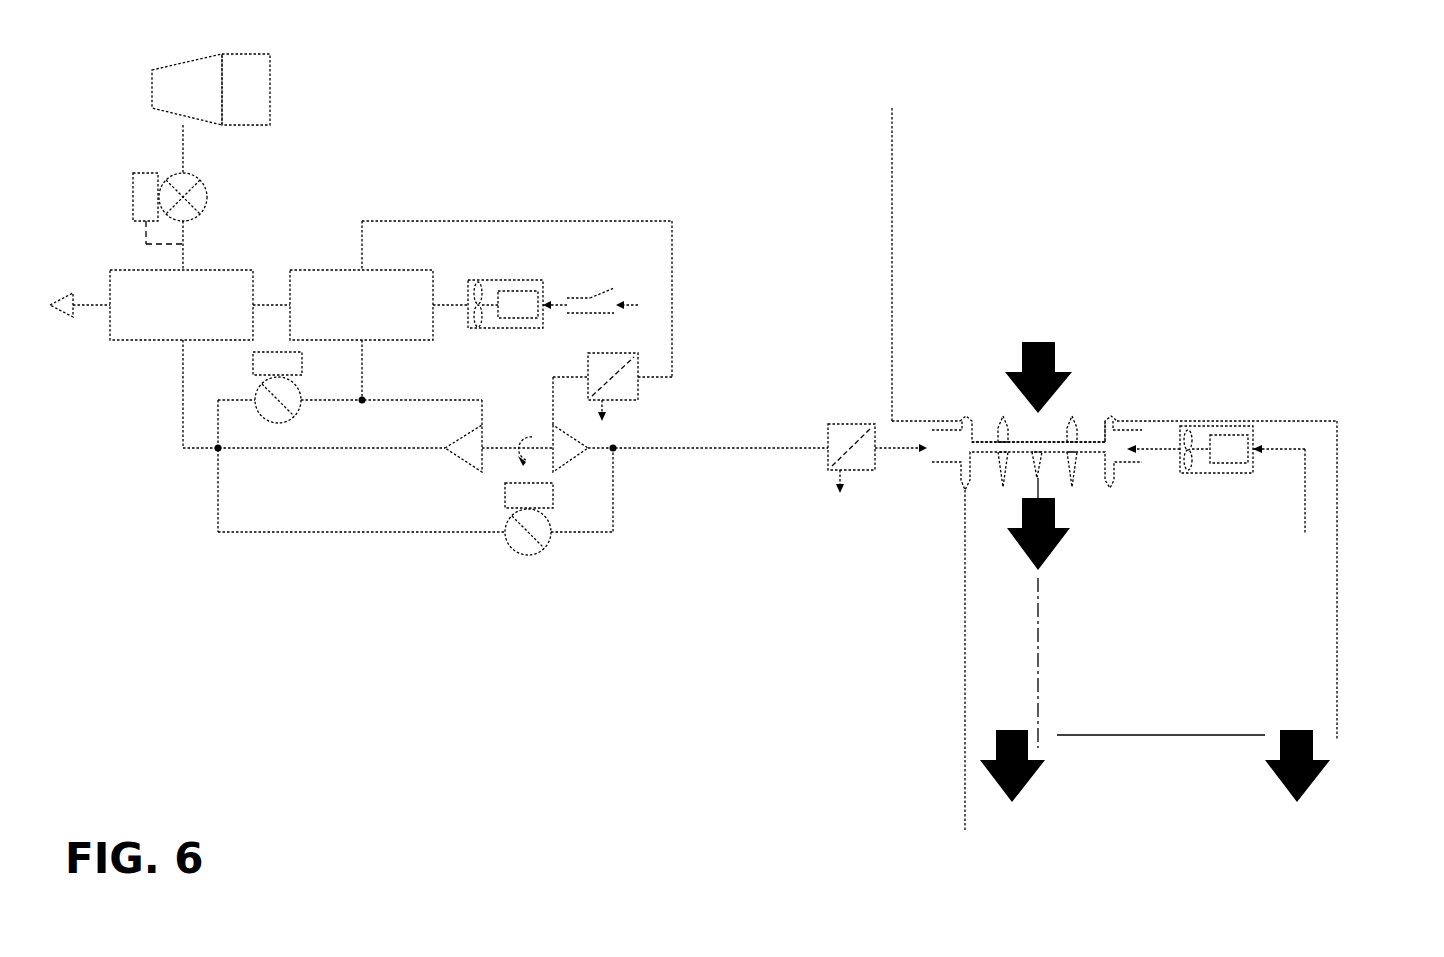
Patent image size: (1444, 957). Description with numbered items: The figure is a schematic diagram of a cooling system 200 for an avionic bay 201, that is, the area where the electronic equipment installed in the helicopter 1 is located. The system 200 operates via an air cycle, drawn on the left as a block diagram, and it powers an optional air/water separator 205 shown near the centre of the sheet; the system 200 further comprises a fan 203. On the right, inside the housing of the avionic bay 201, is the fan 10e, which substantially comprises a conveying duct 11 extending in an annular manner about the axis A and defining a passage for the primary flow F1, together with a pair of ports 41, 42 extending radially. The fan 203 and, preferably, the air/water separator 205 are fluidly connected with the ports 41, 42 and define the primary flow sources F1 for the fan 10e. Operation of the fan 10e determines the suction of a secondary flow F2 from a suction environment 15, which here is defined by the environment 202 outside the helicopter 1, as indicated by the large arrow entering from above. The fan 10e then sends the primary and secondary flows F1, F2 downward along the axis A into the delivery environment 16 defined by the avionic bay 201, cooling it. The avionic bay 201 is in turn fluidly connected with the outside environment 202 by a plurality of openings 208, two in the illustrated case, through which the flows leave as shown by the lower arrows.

The cooling system 200 is at (697, 168).
The helicopter 1 is at (1225, 178).
The avionic bay 201 is at (1328, 428).
The environment outside the helicopter 202 is at (1284, 282).
The suction environment 15 is at (1121, 330).
The fan 203 is at (1234, 425).
The air/water separator 205 is at (842, 430).
The port 41 is at (940, 436).
The port 42 is at (1140, 435).
The fan 10e is at (1110, 401).
The conveying duct 11 is at (957, 493).
The delivery environment 16 is at (1050, 602).
The openings 208 is at (975, 728).
The axis A is at (1042, 694).
The primary flow F1 is at (897, 457).
The secondary flow F2 is at (1074, 357).